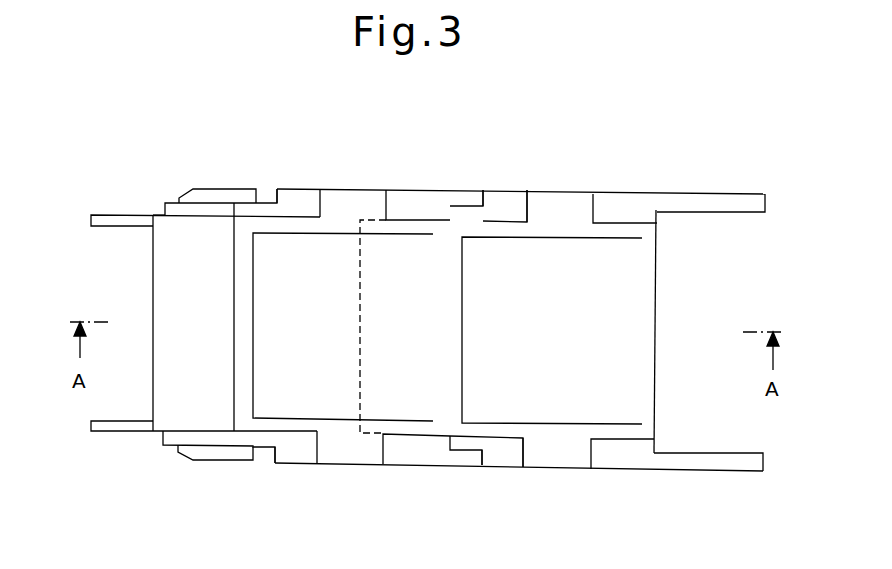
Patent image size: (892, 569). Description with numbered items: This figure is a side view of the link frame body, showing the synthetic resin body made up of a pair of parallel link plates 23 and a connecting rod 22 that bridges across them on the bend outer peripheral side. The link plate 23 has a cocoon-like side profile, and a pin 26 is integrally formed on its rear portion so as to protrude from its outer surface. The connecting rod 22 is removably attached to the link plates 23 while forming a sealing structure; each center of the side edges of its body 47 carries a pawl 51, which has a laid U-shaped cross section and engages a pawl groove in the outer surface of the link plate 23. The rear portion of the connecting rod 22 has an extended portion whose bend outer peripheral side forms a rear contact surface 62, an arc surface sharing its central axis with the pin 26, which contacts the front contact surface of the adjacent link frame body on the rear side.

The connecting rod 22 is at (301, 210).
The link plate 23 is at (121, 215).
The pin 26 is at (217, 190).
The body of the connecting rod 47 is at (301, 460).
The pawl 51 is at (361, 204).
The rear contact surface 62 is at (153, 290).